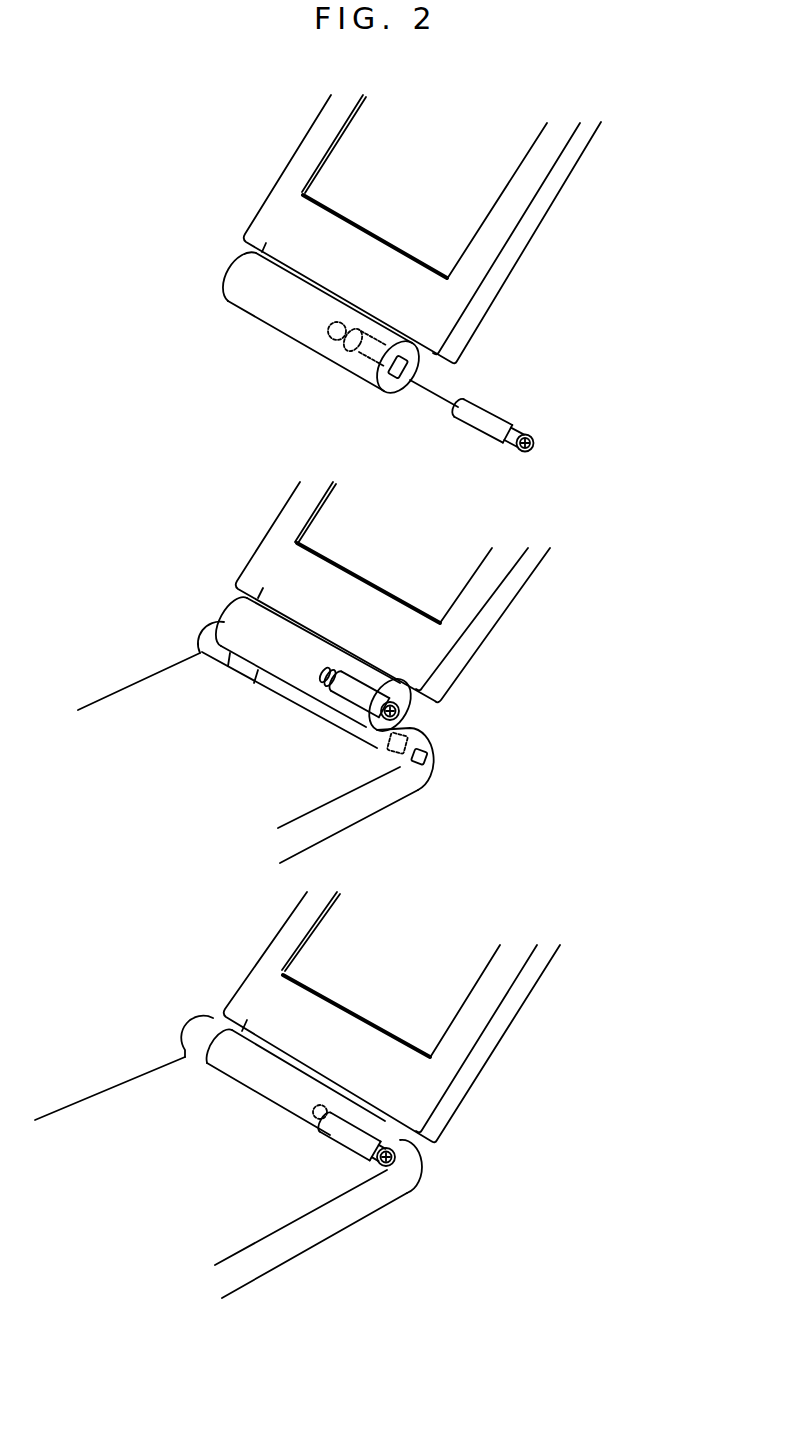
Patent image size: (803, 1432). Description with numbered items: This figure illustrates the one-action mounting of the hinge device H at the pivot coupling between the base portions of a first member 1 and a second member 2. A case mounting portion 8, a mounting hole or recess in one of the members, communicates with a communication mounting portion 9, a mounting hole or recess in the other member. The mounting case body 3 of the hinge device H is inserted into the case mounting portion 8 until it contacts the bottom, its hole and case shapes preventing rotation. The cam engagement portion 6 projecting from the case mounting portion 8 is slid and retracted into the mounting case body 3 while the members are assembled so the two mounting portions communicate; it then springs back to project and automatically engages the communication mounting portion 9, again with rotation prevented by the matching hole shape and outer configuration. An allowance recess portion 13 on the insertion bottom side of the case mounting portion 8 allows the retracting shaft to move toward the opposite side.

The first member 1 is at (137, 700).
The second member 2 is at (517, 248).
The mounting case body 3 is at (508, 417).
The cam engagement portion 6 is at (534, 435).
The case mounting portion 8 is at (362, 358).
The communication mounting portion 9 is at (423, 741).
The allowance recess portion 13 is at (330, 329).
The hinge device H is at (491, 402).